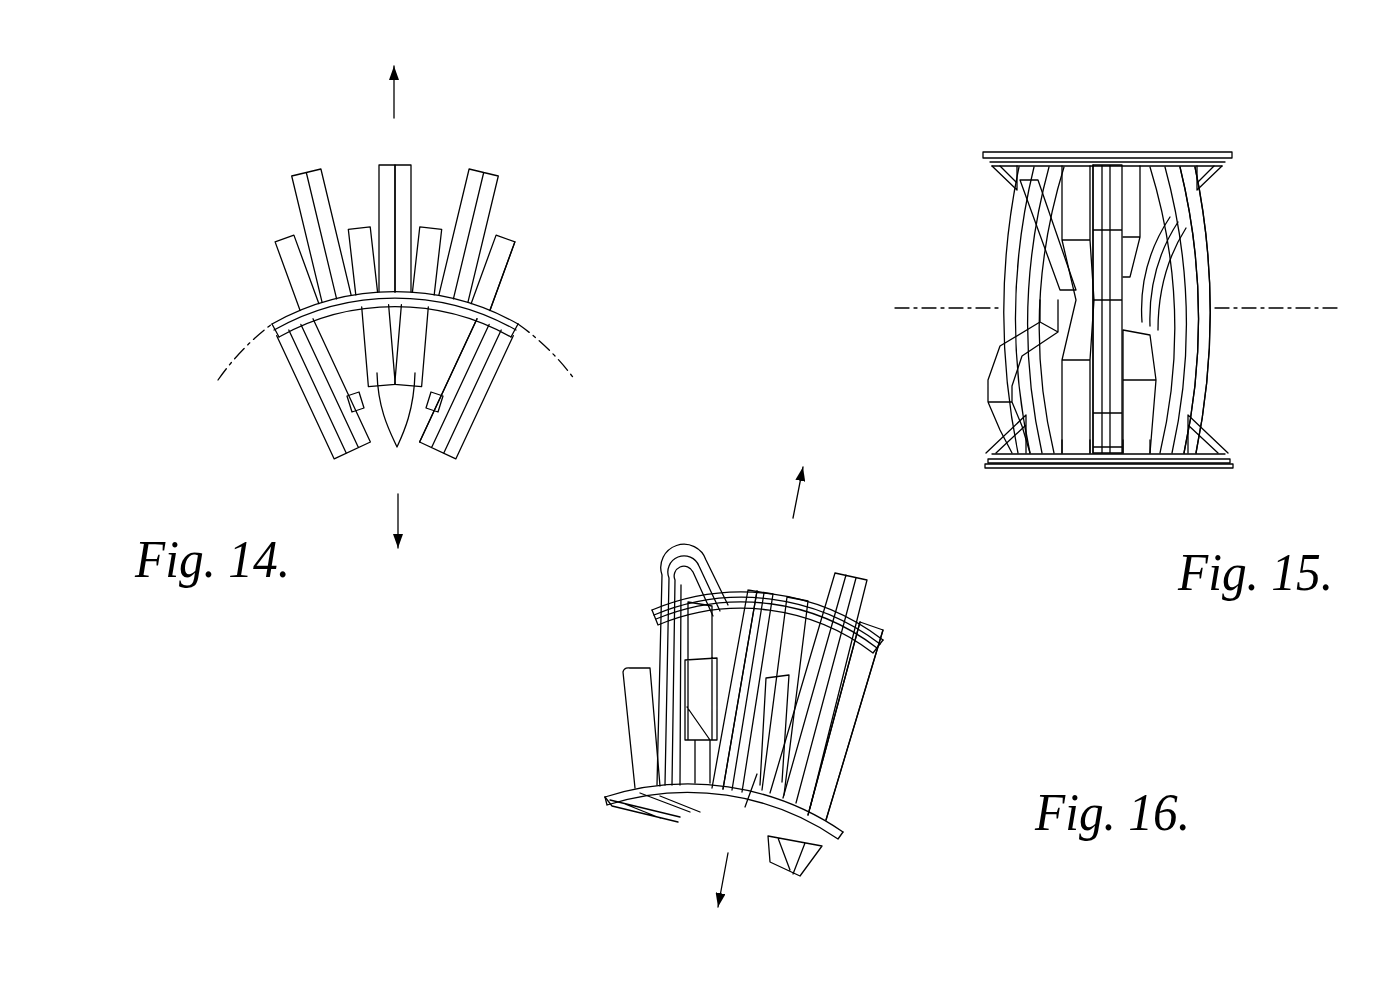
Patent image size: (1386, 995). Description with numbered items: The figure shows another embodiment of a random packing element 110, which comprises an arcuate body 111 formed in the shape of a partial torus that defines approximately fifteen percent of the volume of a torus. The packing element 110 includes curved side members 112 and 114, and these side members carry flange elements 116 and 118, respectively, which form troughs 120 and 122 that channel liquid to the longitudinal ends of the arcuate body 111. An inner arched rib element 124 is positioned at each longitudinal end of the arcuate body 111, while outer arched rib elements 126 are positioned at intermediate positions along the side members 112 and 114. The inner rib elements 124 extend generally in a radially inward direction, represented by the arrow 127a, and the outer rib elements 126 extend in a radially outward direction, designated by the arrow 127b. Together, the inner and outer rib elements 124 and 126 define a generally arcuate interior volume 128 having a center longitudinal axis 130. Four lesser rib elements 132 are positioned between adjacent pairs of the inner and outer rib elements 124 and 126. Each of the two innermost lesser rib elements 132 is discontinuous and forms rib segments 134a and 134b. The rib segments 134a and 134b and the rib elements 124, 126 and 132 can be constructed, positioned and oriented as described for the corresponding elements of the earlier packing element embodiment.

In FIG. 14, the packing element 110 is at (538, 137).
In FIG. 15, the packing element 110 is at (1192, 106).
In FIG. 16, the packing element 110 is at (627, 632).
In FIG. 14, the arcuate body 111 is at (514, 261).
In FIG. 15, the arcuate body 111 is at (1216, 268).
In FIG. 16, the arcuate body 111 is at (876, 696).
In FIG. 14, the curved side member 112 is at (520, 331).
In FIG. 15, the curved side member 112 is at (1210, 479).
In FIG. 16, the curved side member 112 is at (847, 818).
In FIG. 15, the curved side member 114 is at (1215, 146).
In FIG. 16, the curved side member 114 is at (895, 636).
In FIG. 14, the flange element 116 is at (512, 326).
In FIG. 15, the flange element 116 is at (1228, 468).
In FIG. 16, the flange element 116 is at (843, 833).
In FIG. 15, the flange element 118 is at (1230, 153).
In FIG. 16, the flange element 118 is at (893, 646).
In FIG. 15, the trough 120 is at (1226, 460).
In FIG. 15, the trough 122 is at (1222, 163).
In FIG. 16, the trough 122 is at (898, 658).
In FIG. 14, the inner arched rib element 124 is at (335, 448).
In FIG. 15, the inner arched rib element 124 is at (1005, 444).
In FIG. 16, the inner arched rib element 124 is at (640, 808).
In FIG. 14, the outer arched rib element 126 is at (388, 168).
In FIG. 15, the outer arched rib element 126 is at (1016, 242).
In FIG. 16, the outer arched rib element 126 is at (673, 576).
In FIG. 14, the arrow 127a is at (398, 512).
In FIG. 16, the arrow 127a is at (723, 868).
In FIG. 14, the arrow 127b is at (396, 102).
In FIG. 16, the arrow 127b is at (797, 500).
In FIG. 14, the arcuate interior volume 128 is at (426, 416).
In FIG. 15, the arcuate interior volume 128 is at (1216, 336).
In FIG. 16, the arcuate interior volume 128 is at (871, 725).
In FIG. 14, the center longitudinal axis 130 is at (238, 360).
In FIG. 15, the center longitudinal axis 130 is at (905, 306).
In FIG. 14, the lesser rib element 132 is at (276, 247).
In FIG. 15, the lesser rib element 132 is at (1073, 213).
In FIG. 16, the lesser rib element 132 is at (618, 713).
In FIG. 14, the rib segment 134a is at (398, 427).
In FIG. 15, the rib segment 134a is at (1135, 444).
In FIG. 16, the rib segment 134a is at (757, 774).
In FIG. 14, the rib segment 134b is at (360, 237).
In FIG. 15, the rib segment 134b is at (1133, 188).
In FIG. 16, the rib segment 134b is at (728, 610).